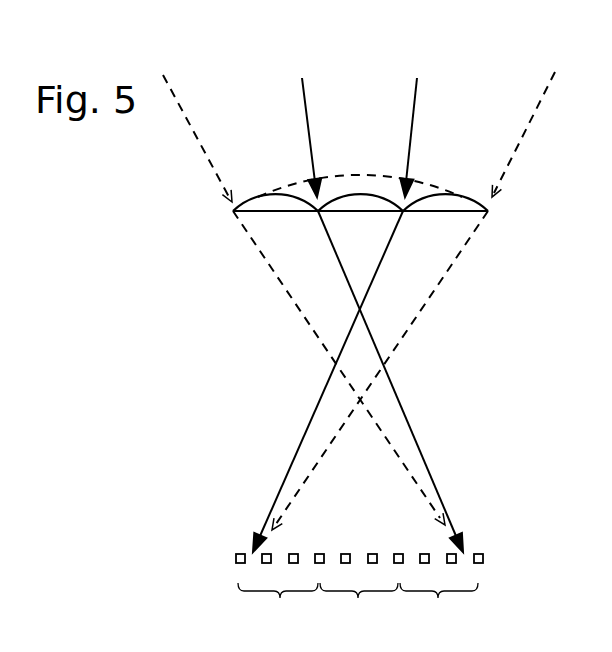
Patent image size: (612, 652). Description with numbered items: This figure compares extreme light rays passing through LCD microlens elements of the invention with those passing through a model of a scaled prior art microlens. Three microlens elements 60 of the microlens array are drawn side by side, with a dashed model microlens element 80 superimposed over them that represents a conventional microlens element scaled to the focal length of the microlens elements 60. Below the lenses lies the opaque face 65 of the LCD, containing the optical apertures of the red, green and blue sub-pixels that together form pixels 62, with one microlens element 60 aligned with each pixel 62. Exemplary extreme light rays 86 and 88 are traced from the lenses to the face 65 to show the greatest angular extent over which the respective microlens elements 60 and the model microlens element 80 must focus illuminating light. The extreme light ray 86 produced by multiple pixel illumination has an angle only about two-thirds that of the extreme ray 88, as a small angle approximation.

The microlens elements 60 is at (368, 205).
The model microlens element 80 is at (355, 172).
The extreme light ray 86 is at (323, 392).
The extreme light ray 88 is at (325, 452).
The opaque face 65 is at (320, 553).
The pixels 62 is at (358, 603).